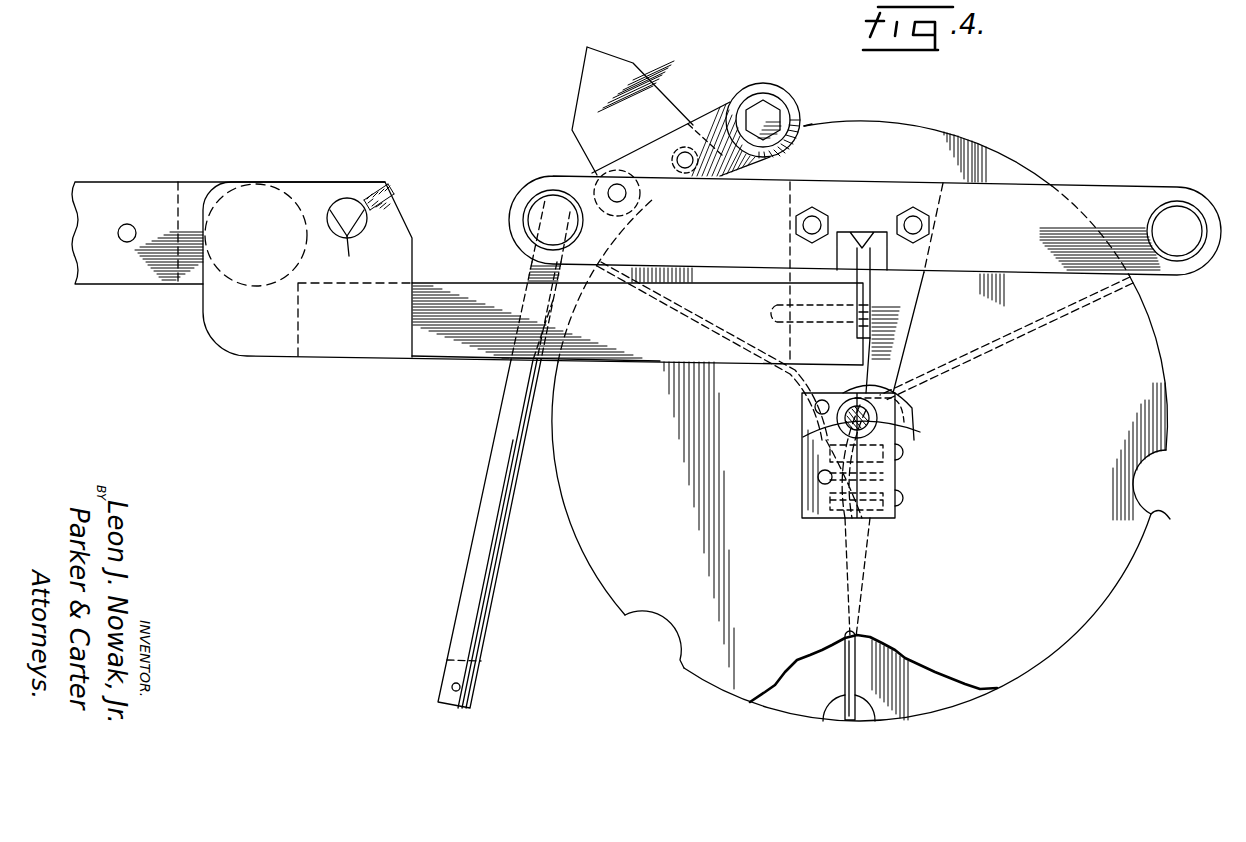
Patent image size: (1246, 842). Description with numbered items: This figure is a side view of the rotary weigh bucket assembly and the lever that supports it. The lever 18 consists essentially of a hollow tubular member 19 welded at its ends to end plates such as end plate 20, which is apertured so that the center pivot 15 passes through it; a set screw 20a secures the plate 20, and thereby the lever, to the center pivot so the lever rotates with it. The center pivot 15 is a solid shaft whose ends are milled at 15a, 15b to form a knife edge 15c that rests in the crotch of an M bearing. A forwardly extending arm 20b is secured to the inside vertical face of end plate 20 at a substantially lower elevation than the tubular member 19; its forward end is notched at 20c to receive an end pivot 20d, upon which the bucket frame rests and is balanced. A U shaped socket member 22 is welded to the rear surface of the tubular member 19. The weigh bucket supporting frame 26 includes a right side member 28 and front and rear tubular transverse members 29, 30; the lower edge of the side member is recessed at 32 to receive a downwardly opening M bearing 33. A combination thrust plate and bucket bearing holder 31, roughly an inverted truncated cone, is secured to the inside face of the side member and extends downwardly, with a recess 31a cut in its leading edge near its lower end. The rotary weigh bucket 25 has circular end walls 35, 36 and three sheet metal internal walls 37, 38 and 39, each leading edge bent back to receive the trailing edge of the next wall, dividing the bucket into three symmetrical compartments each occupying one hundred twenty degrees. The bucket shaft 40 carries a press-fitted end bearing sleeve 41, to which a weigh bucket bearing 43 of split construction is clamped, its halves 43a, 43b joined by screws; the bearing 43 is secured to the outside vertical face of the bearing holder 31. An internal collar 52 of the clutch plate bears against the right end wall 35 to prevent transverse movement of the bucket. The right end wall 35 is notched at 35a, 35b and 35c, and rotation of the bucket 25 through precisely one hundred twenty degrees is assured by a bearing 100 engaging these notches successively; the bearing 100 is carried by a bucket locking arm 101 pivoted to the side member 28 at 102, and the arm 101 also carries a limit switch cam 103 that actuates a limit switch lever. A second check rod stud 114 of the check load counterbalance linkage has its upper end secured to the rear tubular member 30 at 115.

The lever 18 is at (228, 168).
The hollow tubular member 19 is at (302, 176).
The center pivot 15 is at (346, 199).
The milled end of center pivot 15a is at (336, 232).
The milled end of center pivot 15b is at (358, 229).
The knife edge 15c is at (349, 250).
The end plate 20 is at (238, 345).
The set screw 20a is at (394, 196).
The forwardly extending arm 20b is at (463, 350).
The notch 20c is at (872, 336).
The end pivot 20d is at (877, 300).
The U shaped socket member 22 is at (100, 268).
The second check rod stud 114 is at (466, 533).
The attachment point of check rod stud 115 is at (533, 248).
The right side member 28 is at (1086, 184).
The weigh bucket supporting frame 26 is at (1127, 184).
The front tubular transverse member 29 is at (1186, 214).
The rear tubular transverse member 30 is at (532, 222).
The pivot of bucket locking arm 102 is at (610, 188).
The limit switch cam 103 is at (617, 67).
The bucket locking arm 101 is at (723, 110).
The bearing 100 is at (762, 83).
The recess 32 is at (868, 234).
The M bearing 33 is at (880, 238).
The rotary weigh bucket 25 is at (1083, 636).
The right end wall 35 is at (1019, 666).
The notch 35a is at (1153, 516).
The notch 35b is at (670, 655).
The notch 35c is at (801, 124).
The combination thrust plate and bucket bearing holder 31 is at (905, 372).
The recess 31a is at (913, 417).
The internal wall 39 is at (1051, 316).
The internal collar 52 is at (912, 403).
The end bearing sleeve 41 is at (878, 420).
The bucket shaft 40 is at (845, 422).
The weigh bucket bearing 43 is at (882, 524).
The bearing half 43a is at (827, 522).
The bearing half 43b is at (900, 494).
The internal wall 37 is at (872, 702).
The left end wall 36 is at (913, 700).
The internal wall 38 is at (828, 715).